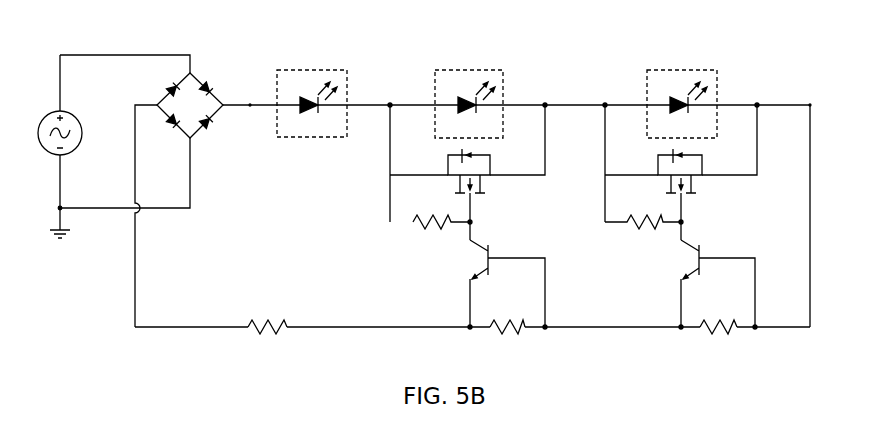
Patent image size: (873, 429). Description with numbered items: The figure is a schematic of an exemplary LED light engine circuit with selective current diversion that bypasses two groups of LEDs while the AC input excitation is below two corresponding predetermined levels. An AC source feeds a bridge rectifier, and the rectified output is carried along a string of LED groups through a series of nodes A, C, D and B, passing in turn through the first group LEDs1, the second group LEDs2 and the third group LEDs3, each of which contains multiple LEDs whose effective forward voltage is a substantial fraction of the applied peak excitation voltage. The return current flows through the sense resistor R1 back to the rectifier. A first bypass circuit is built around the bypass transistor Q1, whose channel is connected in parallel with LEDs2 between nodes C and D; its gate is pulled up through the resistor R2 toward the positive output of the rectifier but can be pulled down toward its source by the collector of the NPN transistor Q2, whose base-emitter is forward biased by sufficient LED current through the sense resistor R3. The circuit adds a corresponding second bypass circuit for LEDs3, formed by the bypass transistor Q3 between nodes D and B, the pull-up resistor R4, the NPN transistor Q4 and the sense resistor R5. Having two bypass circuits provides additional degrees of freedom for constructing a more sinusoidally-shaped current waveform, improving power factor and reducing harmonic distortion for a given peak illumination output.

The first group of LEDs LEDs1 is at (309, 80).
The second group of LEDs LEDs2 is at (466, 81).
The third group of LEDs LEDs3 is at (678, 81).
The node A is at (250, 91).
The node B is at (794, 91).
The node C is at (398, 92).
The node D is at (588, 92).
The first MOSFET switch Q1 is at (495, 170).
The first bipolar transistor Q2 is at (506, 279).
The second MOSFET switch Q3 is at (699, 170).
The second bipolar transistor Q4 is at (717, 279).
The current sense resistor R1 is at (267, 315).
The gate resistor R2 is at (442, 210).
The emitter resistor R3 is at (518, 315).
The gate resistor R4 is at (644, 210).
The emitter resistor R5 is at (728, 315).